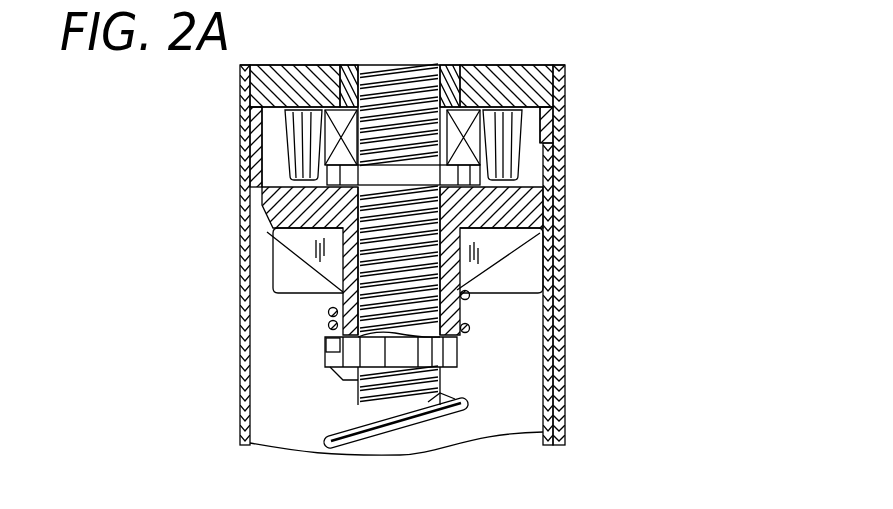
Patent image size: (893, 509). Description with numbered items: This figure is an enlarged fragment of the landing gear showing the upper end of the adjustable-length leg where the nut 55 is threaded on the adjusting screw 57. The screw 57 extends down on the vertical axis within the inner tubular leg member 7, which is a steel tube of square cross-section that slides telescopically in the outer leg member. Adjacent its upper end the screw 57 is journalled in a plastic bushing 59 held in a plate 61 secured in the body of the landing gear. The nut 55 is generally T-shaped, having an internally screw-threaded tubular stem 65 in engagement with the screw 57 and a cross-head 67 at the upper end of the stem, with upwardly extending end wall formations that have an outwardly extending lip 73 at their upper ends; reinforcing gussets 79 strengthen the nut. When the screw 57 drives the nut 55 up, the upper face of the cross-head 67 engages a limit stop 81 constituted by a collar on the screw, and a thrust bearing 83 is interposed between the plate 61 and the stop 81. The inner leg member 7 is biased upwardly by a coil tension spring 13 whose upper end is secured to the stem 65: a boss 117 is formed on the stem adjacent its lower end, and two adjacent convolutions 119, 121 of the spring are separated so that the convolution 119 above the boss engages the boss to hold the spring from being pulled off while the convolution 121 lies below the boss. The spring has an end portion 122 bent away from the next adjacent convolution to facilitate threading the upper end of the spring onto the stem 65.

The inner tubular leg member 7 is at (548, 398).
The coil tension spring 13 is at (420, 432).
The nut 55 is at (293, 253).
The adjusting screw 57 is at (423, 209).
The plastic bushing 59 is at (350, 65).
The plate 61 is at (548, 85).
The tubular stem 65 is at (459, 364).
The cross-head 67 is at (298, 208).
The lip 73 is at (548, 118).
The reinforcing gussets 79 is at (333, 268).
The limit stop 81 is at (500, 177).
The thrust bearing 83 is at (548, 128).
The boss 117 is at (328, 347).
The convolution 119 is at (328, 327).
The convolution 121 is at (335, 377).
The end portion 122 is at (465, 300).